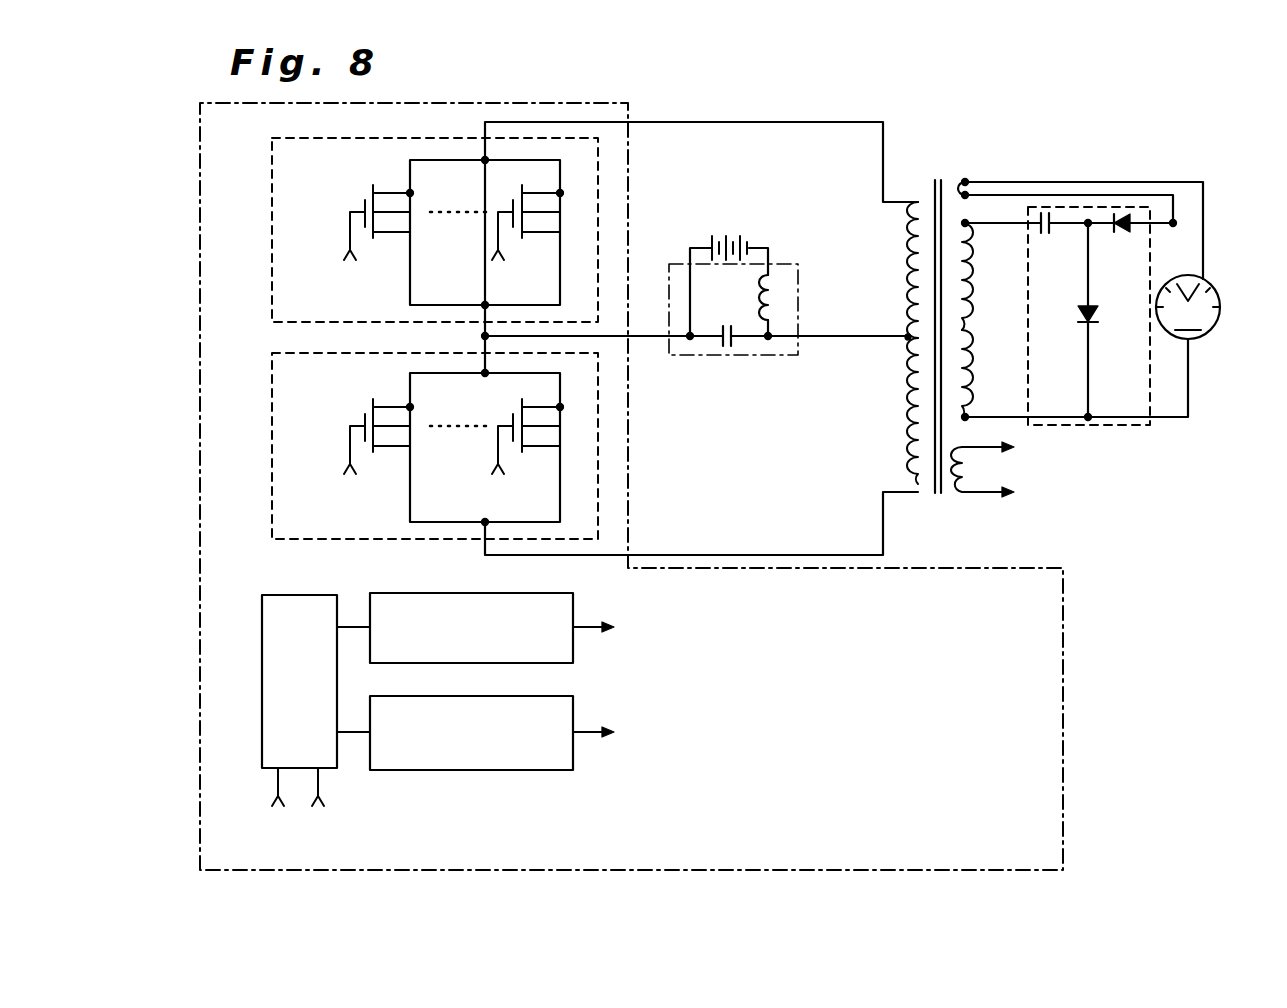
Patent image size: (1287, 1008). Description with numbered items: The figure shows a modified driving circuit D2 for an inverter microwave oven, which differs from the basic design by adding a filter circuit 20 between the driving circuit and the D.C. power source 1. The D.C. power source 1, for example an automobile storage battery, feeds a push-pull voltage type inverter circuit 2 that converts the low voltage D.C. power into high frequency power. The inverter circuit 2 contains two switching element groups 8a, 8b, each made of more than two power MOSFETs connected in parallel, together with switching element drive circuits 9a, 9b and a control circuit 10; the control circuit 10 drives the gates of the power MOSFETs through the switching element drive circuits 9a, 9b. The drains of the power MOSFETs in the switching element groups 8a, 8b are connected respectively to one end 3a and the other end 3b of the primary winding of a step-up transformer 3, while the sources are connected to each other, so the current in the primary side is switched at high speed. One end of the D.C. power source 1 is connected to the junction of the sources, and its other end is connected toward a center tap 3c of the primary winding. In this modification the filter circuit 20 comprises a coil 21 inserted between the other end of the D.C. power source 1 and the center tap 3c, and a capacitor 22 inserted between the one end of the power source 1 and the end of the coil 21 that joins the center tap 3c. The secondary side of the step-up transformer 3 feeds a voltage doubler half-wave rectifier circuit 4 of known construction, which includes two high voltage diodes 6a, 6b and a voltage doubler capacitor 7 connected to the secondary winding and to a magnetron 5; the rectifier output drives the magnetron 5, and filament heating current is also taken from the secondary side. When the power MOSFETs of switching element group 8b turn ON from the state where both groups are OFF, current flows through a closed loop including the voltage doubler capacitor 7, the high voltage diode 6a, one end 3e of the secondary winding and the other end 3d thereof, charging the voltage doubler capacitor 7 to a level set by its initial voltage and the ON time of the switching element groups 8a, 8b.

The D.C. power source 1 is at (711, 245).
The inverter circuit 2 is at (196, 274).
The step-up transformer 3 is at (938, 180).
The one end of the primary winding 3a is at (906, 200).
The other end of the primary winding 3b is at (905, 490).
The center tap 3c is at (900, 338).
The other end of the secondary winding 3d is at (968, 227).
The one end of the secondary winding 3e is at (967, 414).
The voltage doubler half-wave rectifier circuit 4 is at (1108, 432).
The magnetron 5 is at (1221, 298).
The high voltage diode 6a is at (1081, 312).
The high voltage diode 6b is at (1126, 233).
The voltage doubler capacitor 7 is at (1052, 232).
The switching element group 8a is at (270, 201).
The switching element group 8b is at (270, 445).
The switching element drive circuit 9a is at (471, 594).
The switching element drive circuit 9b is at (478, 771).
The control circuit 10 is at (290, 594).
The filter circuit 20 is at (790, 258).
The coil 21 is at (778, 292).
The capacitor 22 is at (740, 343).
The driving circuit D2 is at (1078, 144).